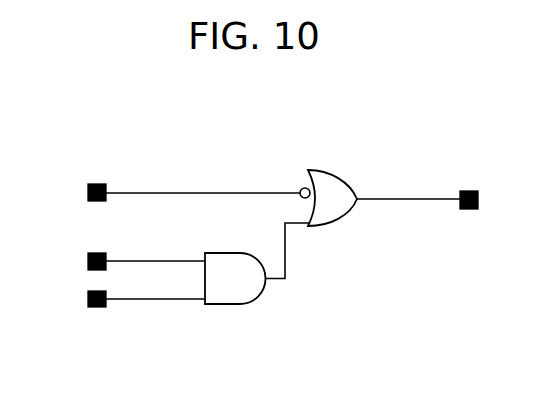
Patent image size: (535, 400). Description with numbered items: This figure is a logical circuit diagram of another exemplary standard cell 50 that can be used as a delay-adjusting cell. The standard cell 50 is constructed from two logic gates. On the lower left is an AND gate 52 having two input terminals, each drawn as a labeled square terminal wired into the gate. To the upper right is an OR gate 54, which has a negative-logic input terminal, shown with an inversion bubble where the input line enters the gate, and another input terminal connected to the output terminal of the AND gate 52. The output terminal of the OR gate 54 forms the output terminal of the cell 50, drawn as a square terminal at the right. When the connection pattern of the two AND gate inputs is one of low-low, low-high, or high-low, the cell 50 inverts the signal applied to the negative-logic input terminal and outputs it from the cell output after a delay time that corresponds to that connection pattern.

The standard cell 50 is at (416, 149).
The AND gate 52 is at (238, 303).
The OR gate 54 is at (345, 220).